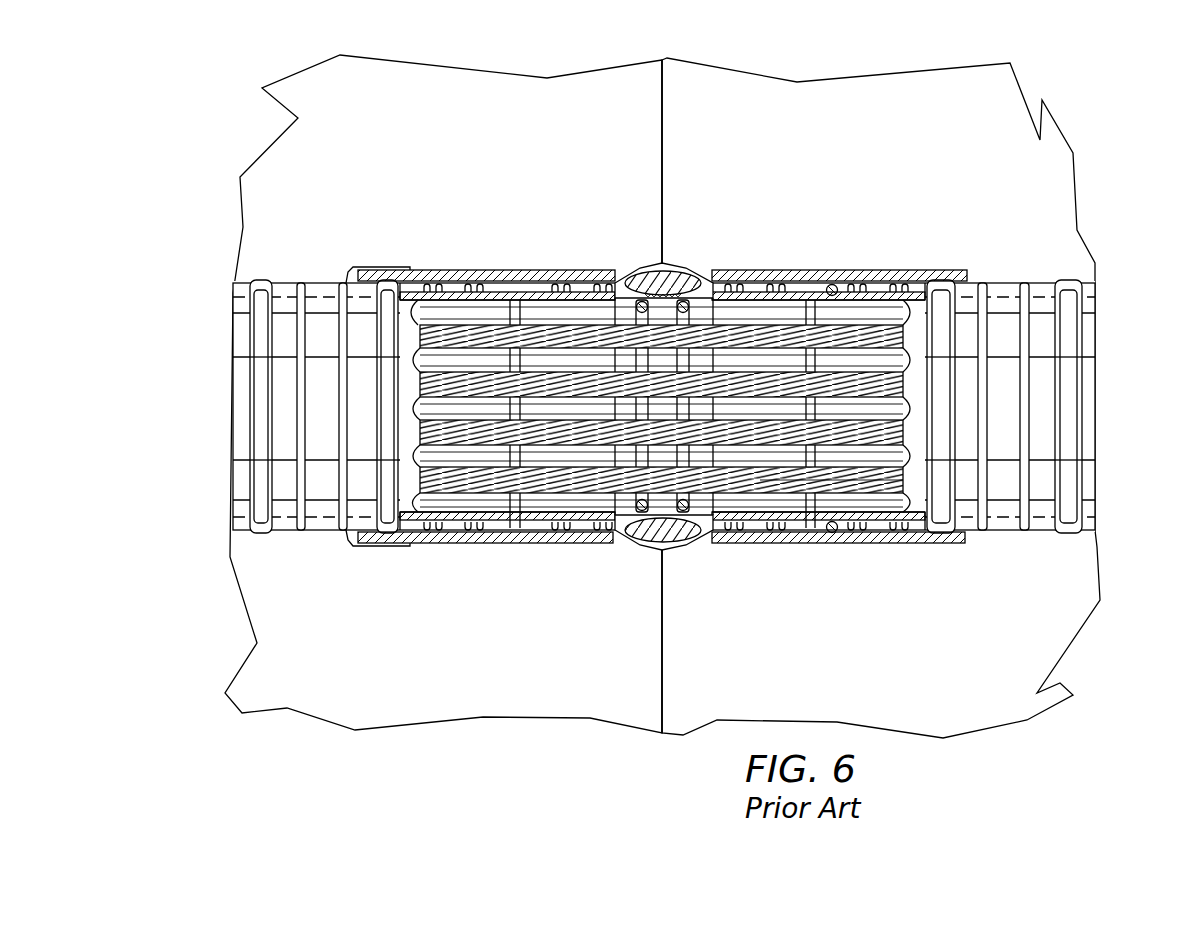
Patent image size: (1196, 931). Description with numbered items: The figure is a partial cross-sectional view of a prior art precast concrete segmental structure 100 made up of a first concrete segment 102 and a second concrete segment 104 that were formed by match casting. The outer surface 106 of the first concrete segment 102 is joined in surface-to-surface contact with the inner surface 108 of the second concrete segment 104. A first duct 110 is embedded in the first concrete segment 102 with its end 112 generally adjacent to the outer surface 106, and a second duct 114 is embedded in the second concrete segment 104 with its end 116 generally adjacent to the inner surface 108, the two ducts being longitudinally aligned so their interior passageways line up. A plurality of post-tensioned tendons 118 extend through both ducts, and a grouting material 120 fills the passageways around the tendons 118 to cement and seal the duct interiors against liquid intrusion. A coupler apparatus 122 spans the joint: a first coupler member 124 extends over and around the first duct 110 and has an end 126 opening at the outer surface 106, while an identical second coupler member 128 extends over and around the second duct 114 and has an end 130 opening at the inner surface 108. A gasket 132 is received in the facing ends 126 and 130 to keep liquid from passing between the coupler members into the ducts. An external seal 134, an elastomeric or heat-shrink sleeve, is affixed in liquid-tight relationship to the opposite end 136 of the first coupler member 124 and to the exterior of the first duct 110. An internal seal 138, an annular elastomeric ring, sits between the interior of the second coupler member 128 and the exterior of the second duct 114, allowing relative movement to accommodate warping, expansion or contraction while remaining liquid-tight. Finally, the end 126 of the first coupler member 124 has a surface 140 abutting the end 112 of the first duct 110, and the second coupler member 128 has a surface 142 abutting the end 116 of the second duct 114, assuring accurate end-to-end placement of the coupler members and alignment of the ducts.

The precast concrete segmental structure 100 is at (806, 62).
The first concrete segment 102 is at (287, 147).
The second concrete segment 104 is at (1057, 145).
The outer surface 106 is at (660, 99).
The inner surface 108 is at (666, 130).
The first duct 110 is at (237, 480).
The end of first duct 112 is at (535, 525).
The second duct 114 is at (1087, 375).
The end of second duct 116 is at (745, 532).
The tendons 118 is at (580, 325).
The grouting material 120 is at (863, 458).
The coupler apparatus 122 is at (525, 261).
The first coupler member 124 is at (420, 543).
The end of first coupler member 126 is at (657, 563).
The second coupler member 128 is at (799, 278).
The end of second coupler member 130 is at (667, 260).
The gasket 132 is at (652, 270).
The external seal 134 is at (362, 269).
The opposite end of first coupler member 136 is at (430, 273).
The internal seal 138 is at (833, 533).
The surface of first coupler member end 140 is at (615, 530).
The surface of second coupler member 142 is at (717, 287).